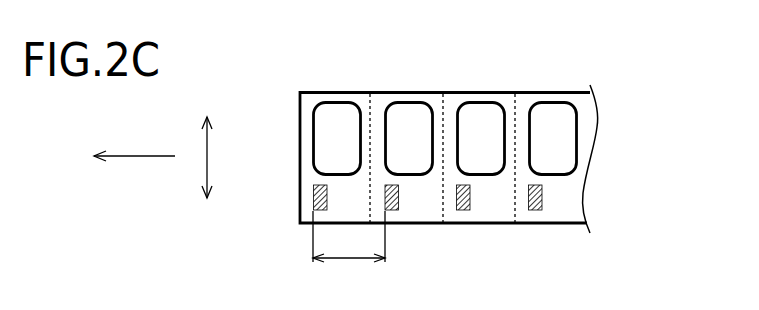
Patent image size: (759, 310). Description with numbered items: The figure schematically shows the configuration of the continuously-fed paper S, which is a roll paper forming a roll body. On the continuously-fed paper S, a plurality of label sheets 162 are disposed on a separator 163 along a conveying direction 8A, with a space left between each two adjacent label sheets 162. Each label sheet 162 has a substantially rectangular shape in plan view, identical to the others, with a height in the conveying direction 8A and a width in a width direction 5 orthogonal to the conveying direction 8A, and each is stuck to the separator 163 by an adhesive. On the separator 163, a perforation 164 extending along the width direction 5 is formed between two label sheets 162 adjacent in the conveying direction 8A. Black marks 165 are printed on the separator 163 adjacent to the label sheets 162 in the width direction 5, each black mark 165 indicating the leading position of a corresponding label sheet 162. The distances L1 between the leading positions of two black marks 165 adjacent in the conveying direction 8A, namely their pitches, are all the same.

The continuously-fed paper S is at (461, 80).
The label sheet 162 is at (407, 102).
The separator 163 is at (313, 97).
The perforation 164 is at (370, 101).
The black mark 165 is at (313, 199).
The conveying direction 8A is at (146, 156).
The width direction 5 is at (212, 139).
The distance L1 is at (349, 236).